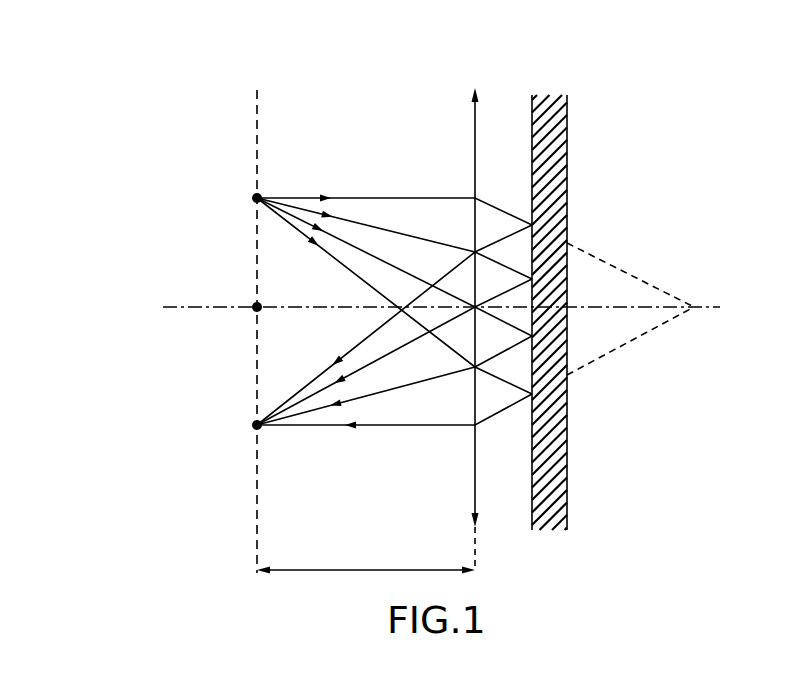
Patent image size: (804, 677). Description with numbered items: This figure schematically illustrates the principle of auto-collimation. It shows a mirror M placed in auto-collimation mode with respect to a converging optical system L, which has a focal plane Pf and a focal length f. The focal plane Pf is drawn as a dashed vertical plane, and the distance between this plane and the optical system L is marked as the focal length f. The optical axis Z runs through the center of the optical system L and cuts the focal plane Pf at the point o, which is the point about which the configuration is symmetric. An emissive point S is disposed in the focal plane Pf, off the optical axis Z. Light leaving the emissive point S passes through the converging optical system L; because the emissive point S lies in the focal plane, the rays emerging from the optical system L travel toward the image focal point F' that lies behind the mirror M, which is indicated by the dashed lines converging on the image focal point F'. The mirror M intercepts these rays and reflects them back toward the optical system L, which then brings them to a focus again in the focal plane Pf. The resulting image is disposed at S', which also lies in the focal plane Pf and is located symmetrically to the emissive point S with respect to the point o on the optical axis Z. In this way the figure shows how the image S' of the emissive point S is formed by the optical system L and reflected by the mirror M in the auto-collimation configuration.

The emissive point S is at (362, 253).
The image of the emissive point S' is at (361, 327).
The point where the optical axis cuts the focal plane o is at (257, 307).
The optical axis Z is at (165, 307).
The focal plane Pf is at (257, 533).
The converging optical system L is at (475, 98).
The mirror M is at (568, 152).
The image focal point F' is at (645, 309).
The focal length f is at (366, 554).